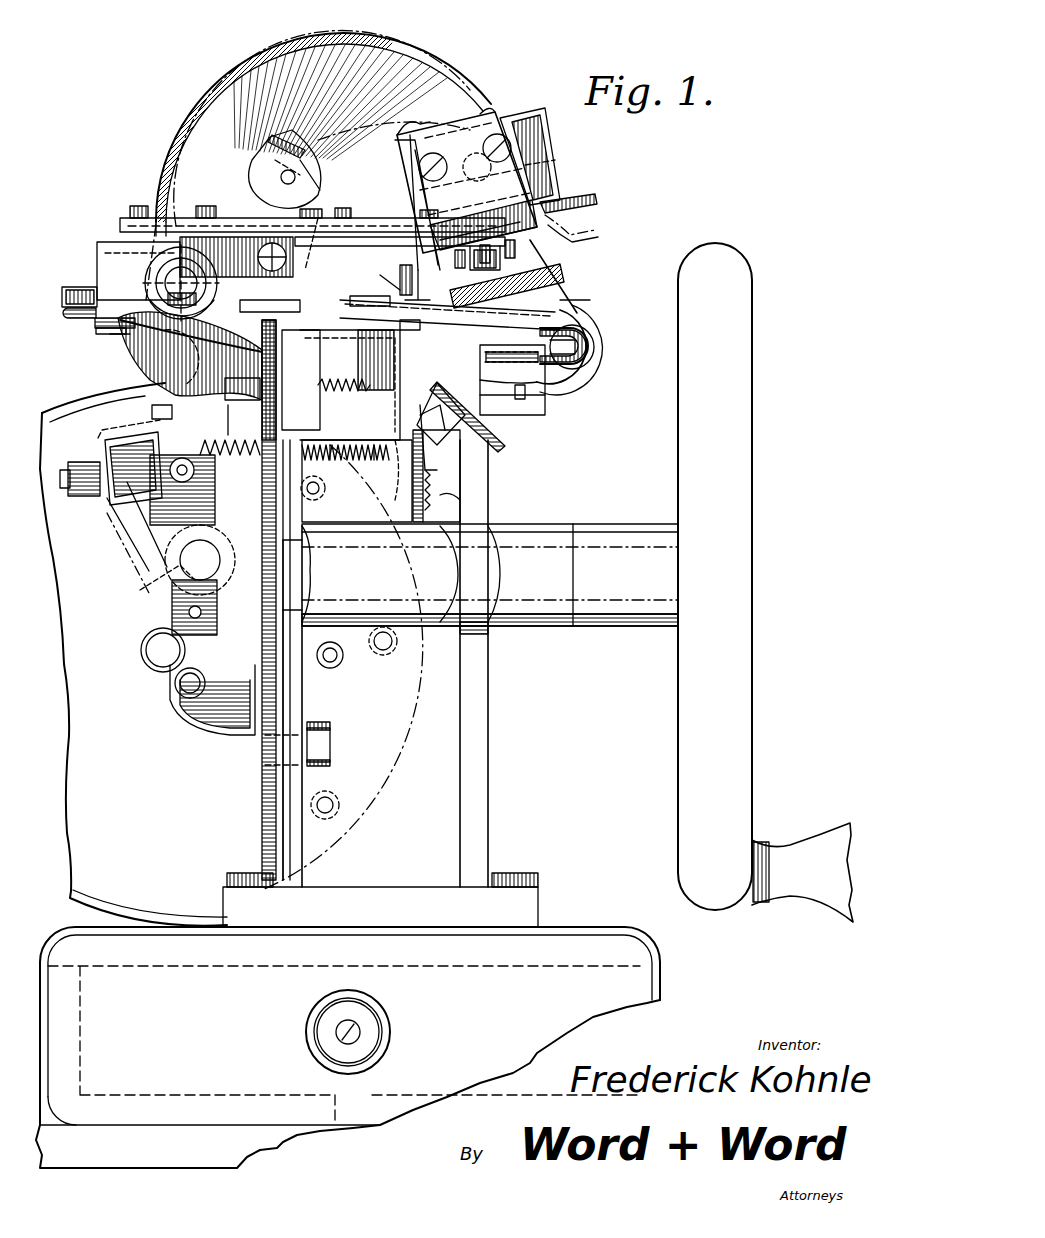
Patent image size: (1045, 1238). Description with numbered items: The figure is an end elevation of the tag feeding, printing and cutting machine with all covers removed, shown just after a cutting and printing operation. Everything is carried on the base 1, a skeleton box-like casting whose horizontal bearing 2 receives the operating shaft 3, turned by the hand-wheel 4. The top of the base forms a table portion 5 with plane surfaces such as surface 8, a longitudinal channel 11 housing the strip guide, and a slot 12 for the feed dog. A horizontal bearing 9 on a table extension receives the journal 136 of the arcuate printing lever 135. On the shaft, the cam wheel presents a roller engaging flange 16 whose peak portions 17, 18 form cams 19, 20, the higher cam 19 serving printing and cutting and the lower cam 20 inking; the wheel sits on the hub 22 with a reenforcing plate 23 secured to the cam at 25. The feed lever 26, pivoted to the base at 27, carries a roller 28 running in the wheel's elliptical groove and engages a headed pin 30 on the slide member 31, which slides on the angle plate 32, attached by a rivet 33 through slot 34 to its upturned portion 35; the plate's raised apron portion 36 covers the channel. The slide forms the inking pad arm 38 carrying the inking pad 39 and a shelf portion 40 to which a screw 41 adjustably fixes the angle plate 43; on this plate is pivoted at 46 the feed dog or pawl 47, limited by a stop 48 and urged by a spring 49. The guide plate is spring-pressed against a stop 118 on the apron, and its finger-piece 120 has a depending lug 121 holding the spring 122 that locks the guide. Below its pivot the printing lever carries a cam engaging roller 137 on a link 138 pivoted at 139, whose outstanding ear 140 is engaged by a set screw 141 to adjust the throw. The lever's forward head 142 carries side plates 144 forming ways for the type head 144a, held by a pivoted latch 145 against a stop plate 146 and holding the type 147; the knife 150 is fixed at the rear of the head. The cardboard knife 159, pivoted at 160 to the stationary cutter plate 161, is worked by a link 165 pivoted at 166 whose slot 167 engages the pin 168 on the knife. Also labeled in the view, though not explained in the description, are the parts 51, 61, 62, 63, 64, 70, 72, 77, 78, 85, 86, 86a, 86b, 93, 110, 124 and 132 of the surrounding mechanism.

The base 1 is at (488, 722).
The horizontal bearing 2 is at (505, 525).
The operating shaft 3 is at (590, 545).
The hand-wheel 4 is at (740, 557).
The table portion 5 is at (540, 402).
The plane surface 8 is at (470, 335).
The horizontal bearing 9 is at (166, 305).
The longitudinal channel 11 is at (318, 186).
The slot 12 is at (488, 370).
The roller engaging flange 16 is at (262, 680).
The peak portion 17 is at (178, 690).
The peak portion 18 is at (300, 462).
The cam 19 is at (190, 720).
The cam 20 is at (326, 486).
The hub 22 is at (179, 607).
The reenforcing plate 23 is at (178, 550).
The attachment point 25 is at (168, 672).
The feed lever 26 is at (280, 700).
The pivot 27 is at (282, 766).
The roller 28 is at (268, 595).
The headed pin 30 is at (265, 345).
The slide member 31 is at (292, 355).
The angle plate 32 is at (298, 376).
The pin or rivet 33 is at (300, 388).
The slot 34 is at (376, 360).
The upturned portion 35 is at (242, 388).
The raised apron portion 36 is at (385, 312).
The inking pad arm 38 is at (395, 290).
The inking pad 39 is at (548, 276).
The shelf portion 40 is at (335, 458).
The screw 41 is at (378, 458).
The angle plate 43 is at (394, 470).
The pivot 46 is at (438, 477).
The feed dog or pawl 47 is at (450, 462).
The stop 48 is at (452, 429).
The spring 49 is at (450, 498).
The plate 51 is at (269, 299).
The cap 61 is at (355, 268).
The plate 62 is at (345, 240).
The bearing block 63 is at (195, 256).
The rod 64 is at (312, 213).
The pulley 70 is at (285, 169).
The top plate 72 is at (345, 222).
The pin 77 is at (103, 331).
The pin 78 is at (118, 336).
The bracket 85 is at (104, 248).
The screw 86 is at (100, 322).
The nut 86a is at (80, 288).
The nut 86b is at (78, 312).
The post 93 is at (402, 290).
The arm housing 110 is at (133, 654).
The stop 118 is at (427, 285).
The finger-piece 120 is at (497, 438).
The depending lug 121 is at (500, 405).
The spring 122 is at (344, 390).
The hook 124 is at (578, 320).
The hook tip 132 is at (595, 350).
The printing lever 135 is at (178, 172).
The pivot or journal 136 is at (145, 276).
The cam engaging roller 137 is at (150, 590).
The link 138 is at (182, 490).
The pivot 139 is at (156, 392).
The outstanding ear 140 is at (154, 428).
The set screw 141 is at (92, 492).
The head 142 is at (500, 108).
The plate 144 is at (130, 462).
The type head 144a is at (584, 205).
The pivoted latch 145 is at (535, 152).
The stop plate 146 is at (535, 175).
The type 147 is at (505, 258).
The knife 150 is at (410, 190).
The knife 159 is at (570, 296).
The pivot 160 is at (595, 330).
The stationary cutter plate 161 is at (592, 372).
The link 165 is at (470, 185).
The pivot 166 is at (480, 148).
The slot 167 is at (480, 233).
The pin 168 is at (550, 224).